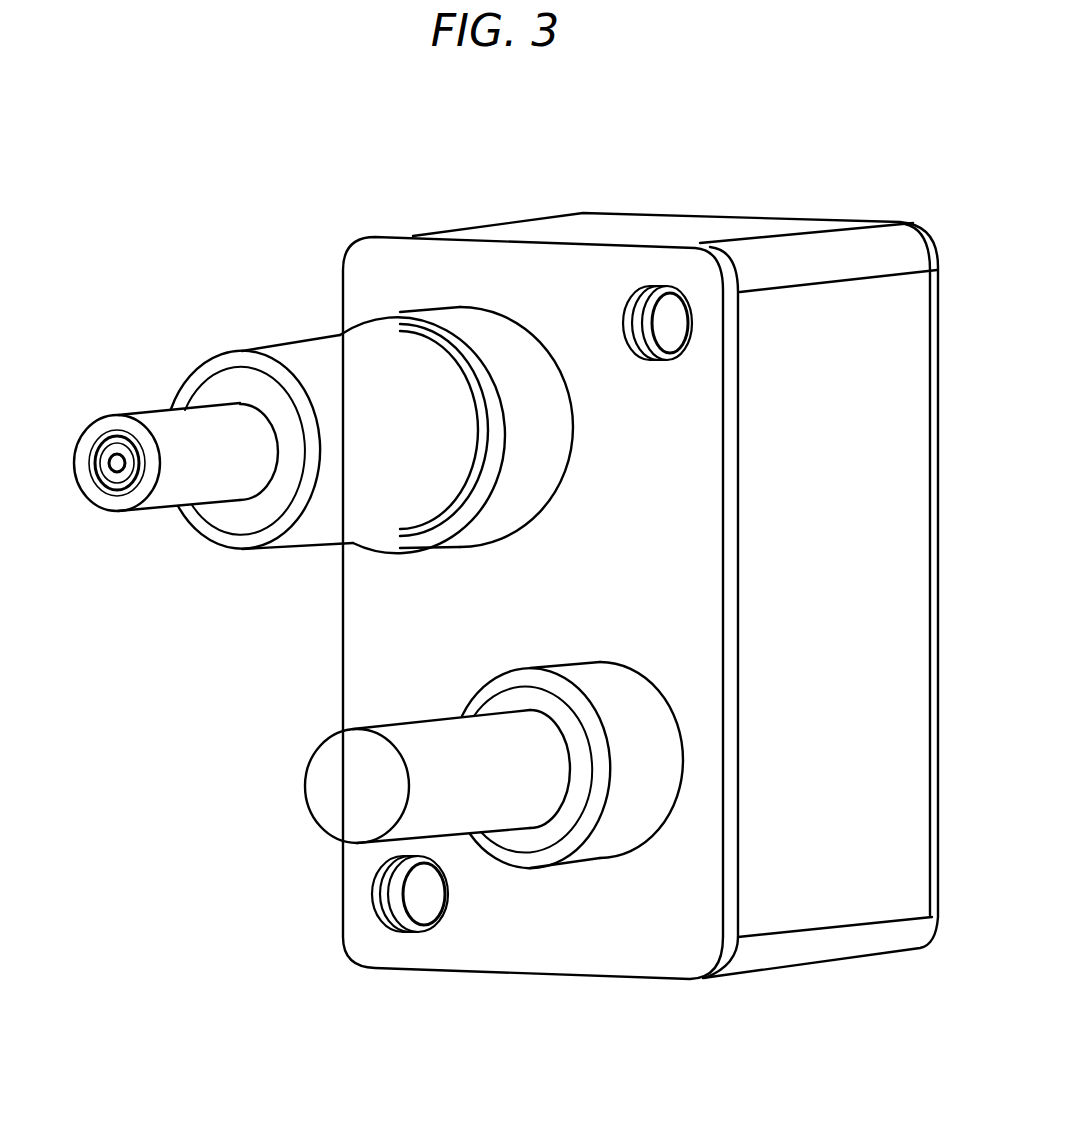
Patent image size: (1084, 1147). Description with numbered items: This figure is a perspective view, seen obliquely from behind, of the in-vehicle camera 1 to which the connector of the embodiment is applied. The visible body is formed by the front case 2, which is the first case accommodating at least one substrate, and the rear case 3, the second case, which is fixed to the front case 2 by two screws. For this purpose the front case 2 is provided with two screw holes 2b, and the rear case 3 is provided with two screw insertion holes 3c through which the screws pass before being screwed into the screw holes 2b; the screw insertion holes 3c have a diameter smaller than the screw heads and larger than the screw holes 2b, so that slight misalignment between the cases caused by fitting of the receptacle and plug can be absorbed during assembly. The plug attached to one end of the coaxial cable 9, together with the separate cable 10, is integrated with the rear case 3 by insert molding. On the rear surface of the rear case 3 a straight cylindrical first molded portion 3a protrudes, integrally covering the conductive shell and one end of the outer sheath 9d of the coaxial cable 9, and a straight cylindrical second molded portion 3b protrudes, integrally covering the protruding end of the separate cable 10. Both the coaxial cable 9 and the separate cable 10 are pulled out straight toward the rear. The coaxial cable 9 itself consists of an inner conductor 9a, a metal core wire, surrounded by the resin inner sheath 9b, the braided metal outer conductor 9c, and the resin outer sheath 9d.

The in-vehicle camera 1 is at (482, 151).
The front case 2 is at (812, 222).
The screw holes 2b is at (664, 290).
The rear case 3 is at (703, 270).
The first molded portion 3a is at (297, 340).
The second molded portion 3b is at (473, 685).
The screw insertion holes 3c is at (632, 300).
The coaxial cable 9 is at (170, 455).
The inner conductor 9a is at (128, 434).
The inner sheath 9b is at (95, 432).
The outer conductor 9c is at (107, 497).
The outer sheath 9d is at (122, 503).
The separate cable 10 is at (316, 782).